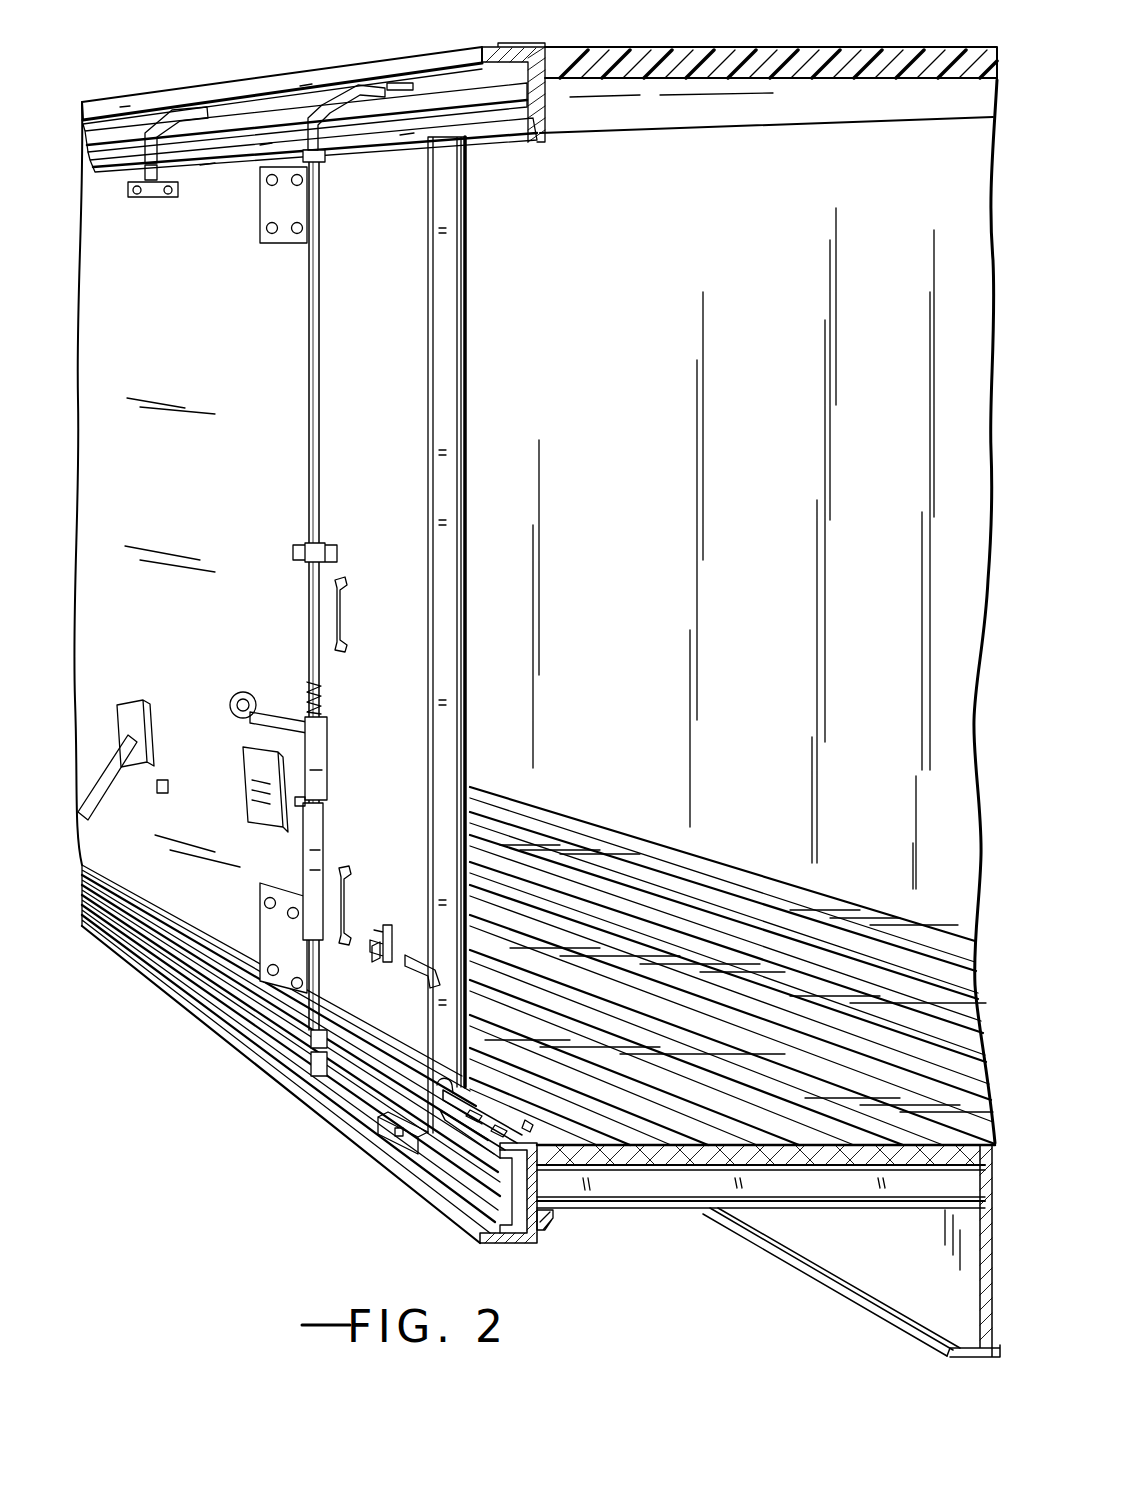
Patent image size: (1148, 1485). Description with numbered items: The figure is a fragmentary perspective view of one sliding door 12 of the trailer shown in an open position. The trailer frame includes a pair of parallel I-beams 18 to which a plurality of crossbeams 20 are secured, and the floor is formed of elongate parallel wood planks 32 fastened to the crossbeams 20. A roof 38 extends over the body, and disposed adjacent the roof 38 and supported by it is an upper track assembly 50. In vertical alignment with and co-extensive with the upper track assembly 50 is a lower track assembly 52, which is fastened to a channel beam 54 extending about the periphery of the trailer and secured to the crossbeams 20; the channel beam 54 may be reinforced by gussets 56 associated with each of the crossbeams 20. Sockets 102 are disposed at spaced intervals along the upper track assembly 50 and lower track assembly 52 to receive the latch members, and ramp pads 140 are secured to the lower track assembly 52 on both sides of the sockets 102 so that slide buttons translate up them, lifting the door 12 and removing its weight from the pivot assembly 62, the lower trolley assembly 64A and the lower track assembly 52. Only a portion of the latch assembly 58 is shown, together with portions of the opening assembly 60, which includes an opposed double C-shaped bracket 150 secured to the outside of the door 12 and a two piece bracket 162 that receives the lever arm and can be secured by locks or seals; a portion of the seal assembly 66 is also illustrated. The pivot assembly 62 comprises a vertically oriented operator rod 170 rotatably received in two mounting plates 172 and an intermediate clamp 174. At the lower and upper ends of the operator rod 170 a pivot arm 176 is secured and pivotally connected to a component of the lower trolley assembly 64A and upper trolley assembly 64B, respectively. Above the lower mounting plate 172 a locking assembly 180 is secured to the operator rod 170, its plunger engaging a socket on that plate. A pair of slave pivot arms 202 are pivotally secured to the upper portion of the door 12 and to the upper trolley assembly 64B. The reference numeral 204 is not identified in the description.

The sliding door 12 is at (152, 367).
The I-beam 18 is at (915, 1265).
The crossbeam 20 is at (683, 1183).
The wood plank 32 is at (643, 1120).
The roof 38 is at (710, 60).
The upper track assembly 50 is at (512, 52).
The lower track assembly 52 is at (503, 1243).
The channel beam 54 is at (545, 1188).
The gusset 56 is at (550, 1226).
The latch assembly 58 is at (118, 700).
The opening assembly 60 is at (416, 994).
The pivot assembly 62 is at (331, 766).
The lower trolley assembly 64A is at (364, 1178).
The upper trolley assembly 64B is at (385, 58).
The seal assembly 66 is at (428, 466).
The socket 102 is at (480, 1112).
The ramp pad 140 is at (468, 1090).
The double C-shaped bracket 150 is at (422, 950).
The two piece bracket 162 is at (385, 958).
The operator rod 170 is at (321, 398).
The mounting plate 172 is at (262, 200).
The clamp 174 is at (338, 552).
The pivot arm 176 is at (327, 100).
The locking assembly 180 is at (298, 855).
The slave pivot arm 202 is at (158, 118).
The hanger bracket 204 is at (153, 190).